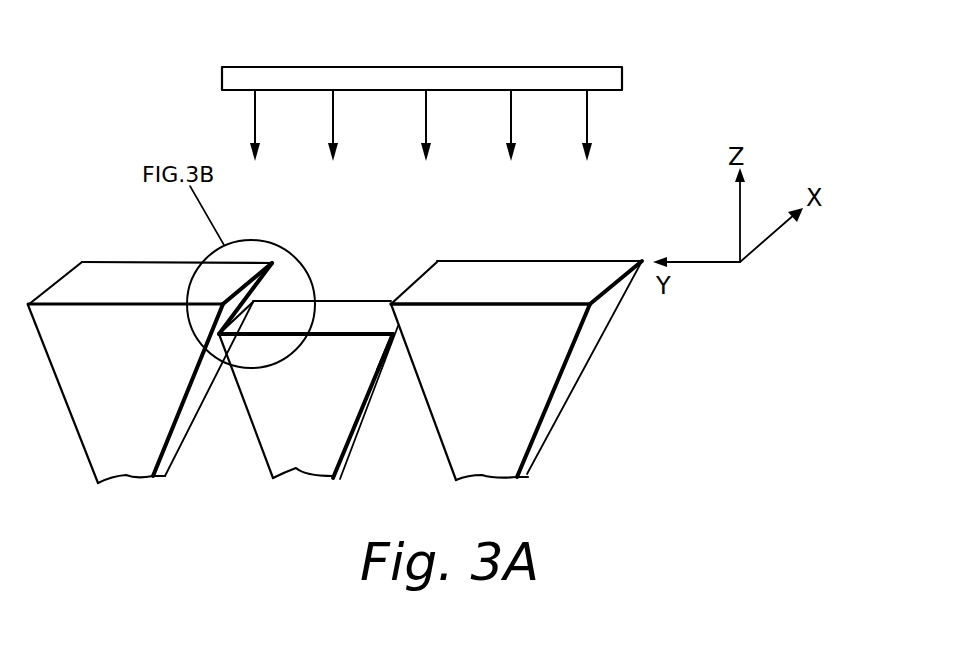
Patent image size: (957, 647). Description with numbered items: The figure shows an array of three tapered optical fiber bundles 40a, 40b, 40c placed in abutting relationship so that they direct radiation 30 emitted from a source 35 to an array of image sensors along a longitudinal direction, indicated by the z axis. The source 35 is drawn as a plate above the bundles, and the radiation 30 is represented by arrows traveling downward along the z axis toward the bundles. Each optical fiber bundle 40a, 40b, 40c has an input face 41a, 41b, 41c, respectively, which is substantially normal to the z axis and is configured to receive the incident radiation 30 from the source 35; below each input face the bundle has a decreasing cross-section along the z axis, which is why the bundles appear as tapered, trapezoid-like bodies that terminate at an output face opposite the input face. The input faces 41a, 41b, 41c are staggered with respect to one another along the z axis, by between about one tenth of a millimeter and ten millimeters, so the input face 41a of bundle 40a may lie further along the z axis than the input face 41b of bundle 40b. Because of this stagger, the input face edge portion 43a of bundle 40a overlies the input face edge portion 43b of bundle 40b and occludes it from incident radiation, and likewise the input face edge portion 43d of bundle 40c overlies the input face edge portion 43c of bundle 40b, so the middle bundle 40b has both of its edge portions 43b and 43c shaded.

The radiation 30 is at (640, 55).
The source 35 is at (385, 67).
The tapered optical fiber bundle 40a is at (137, 453).
The tapered optical fiber bundle 40b is at (295, 468).
The tapered optical fiber bundle 40c is at (512, 455).
The input face 41a is at (103, 280).
The input face 41b is at (353, 313).
The input face 41c is at (530, 277).
The input face edge portion 43a is at (265, 267).
The input face edge portion 43b is at (263, 320).
The input face edge portion 43c is at (377, 317).
The input face edge portion 43d is at (433, 270).